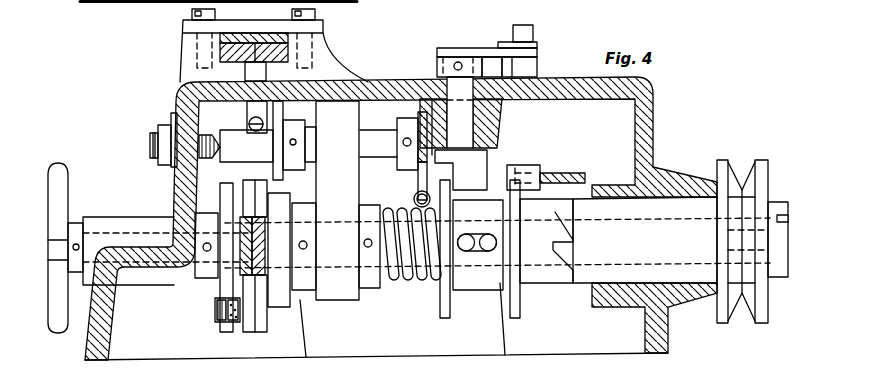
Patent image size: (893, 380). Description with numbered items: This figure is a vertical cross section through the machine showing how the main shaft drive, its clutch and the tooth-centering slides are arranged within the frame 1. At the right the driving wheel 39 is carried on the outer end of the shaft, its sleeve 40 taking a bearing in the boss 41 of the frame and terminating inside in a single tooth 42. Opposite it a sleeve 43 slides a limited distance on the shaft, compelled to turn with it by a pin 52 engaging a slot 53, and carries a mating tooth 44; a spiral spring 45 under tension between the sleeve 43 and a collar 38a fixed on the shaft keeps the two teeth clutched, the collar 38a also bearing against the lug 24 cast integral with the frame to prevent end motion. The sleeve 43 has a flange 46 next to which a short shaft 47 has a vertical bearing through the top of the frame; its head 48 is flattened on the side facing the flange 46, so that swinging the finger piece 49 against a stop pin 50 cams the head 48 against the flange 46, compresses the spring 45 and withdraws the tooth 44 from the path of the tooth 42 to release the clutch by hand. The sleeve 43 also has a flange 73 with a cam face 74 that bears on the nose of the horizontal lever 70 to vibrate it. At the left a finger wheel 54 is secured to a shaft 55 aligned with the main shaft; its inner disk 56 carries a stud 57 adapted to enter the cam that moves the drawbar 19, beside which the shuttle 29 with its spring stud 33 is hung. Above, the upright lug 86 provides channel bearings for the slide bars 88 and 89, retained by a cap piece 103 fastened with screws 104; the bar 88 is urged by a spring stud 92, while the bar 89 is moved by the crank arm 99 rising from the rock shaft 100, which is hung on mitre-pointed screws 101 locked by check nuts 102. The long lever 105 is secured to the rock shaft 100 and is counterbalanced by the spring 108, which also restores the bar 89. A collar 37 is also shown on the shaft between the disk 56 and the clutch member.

The frame 1 is at (650, 118).
The drawbar 19 is at (268, 325).
The lug 24 is at (336, 200).
The shuttle section 29 is at (246, 332).
The spring stud 33 is at (217, 322).
The collar 37 is at (279, 250).
The collar 38a is at (380, 203).
The driving wheel 39 is at (759, 160).
The sleeve 40 is at (680, 240).
The boss 41 is at (620, 307).
The tooth 42 is at (573, 250).
The sleeve 43 is at (478, 245).
The tooth 44 is at (560, 218).
The spiral spring 45 is at (410, 278).
The flange 46 is at (440, 310).
The short shaft 47 is at (461, 112).
The head 48 is at (461, 170).
The finger piece 49 is at (487, 50).
The stop pin 50 is at (515, 65).
The pin 52 is at (467, 251).
The slot 53 is at (489, 251).
The finger wheel 54 is at (65, 178).
The shaft 55 is at (113, 232).
The disk 56 is at (220, 197).
The stud 57 is at (242, 193).
The lever 70 is at (578, 169).
The flange 73 is at (520, 306).
The cam face 74 is at (535, 165).
The upright lug 86 is at (182, 62).
The slide bar 88 is at (288, 53).
The slide bar 89 is at (288, 39).
The spring stud 92 is at (245, 72).
The crank arm 99 is at (275, 138).
The rock shaft 100 is at (390, 144).
The mitre-pointed screw 101 is at (150, 145).
The check nut 102 is at (165, 130).
The cap piece 103 is at (255, 18).
The screw 104 is at (192, 15).
The long lever 105 is at (417, 112).
The spring 108 is at (414, 198).